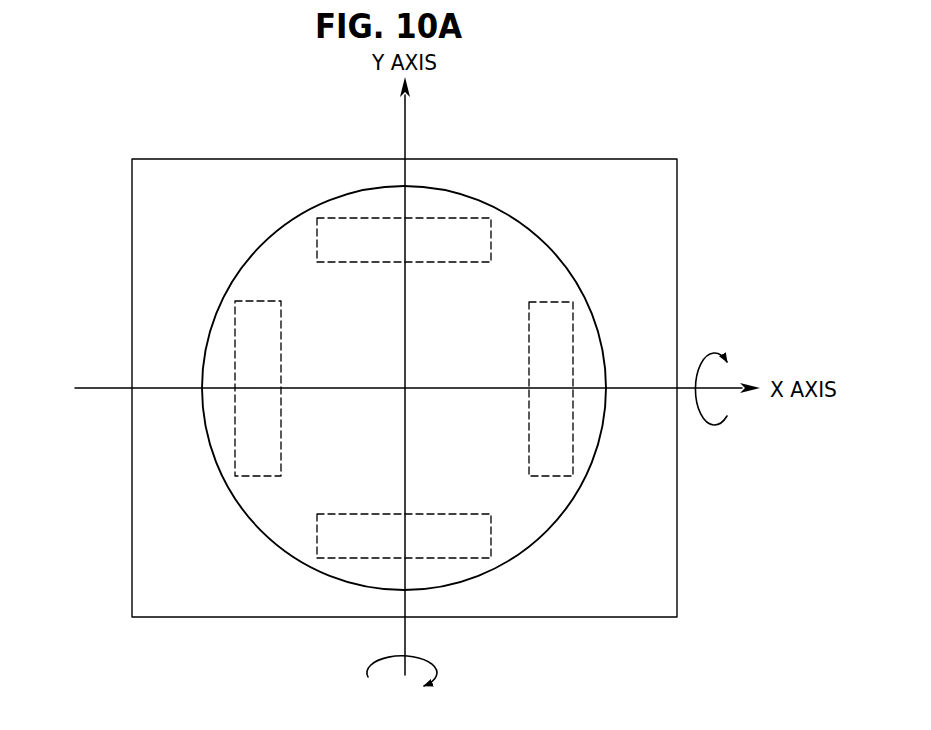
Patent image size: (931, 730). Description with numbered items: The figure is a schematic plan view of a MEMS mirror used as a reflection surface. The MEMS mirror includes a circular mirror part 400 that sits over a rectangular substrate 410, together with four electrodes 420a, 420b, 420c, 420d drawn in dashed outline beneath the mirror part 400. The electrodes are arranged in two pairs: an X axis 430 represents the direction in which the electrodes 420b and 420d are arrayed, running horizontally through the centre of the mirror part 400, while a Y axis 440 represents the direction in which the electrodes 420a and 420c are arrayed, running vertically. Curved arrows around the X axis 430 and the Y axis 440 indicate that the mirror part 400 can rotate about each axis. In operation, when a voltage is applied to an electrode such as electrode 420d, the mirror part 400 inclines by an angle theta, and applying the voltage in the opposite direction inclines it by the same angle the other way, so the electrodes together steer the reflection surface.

The mirror part 400 is at (527, 245).
The substrate 410 is at (633, 178).
The electrode 420a is at (464, 220).
The electrode 420b is at (573, 320).
The electrode 420c is at (465, 560).
The electrode 420d is at (236, 320).
The X axis 430 is at (634, 392).
The Y axis 440 is at (392, 600).